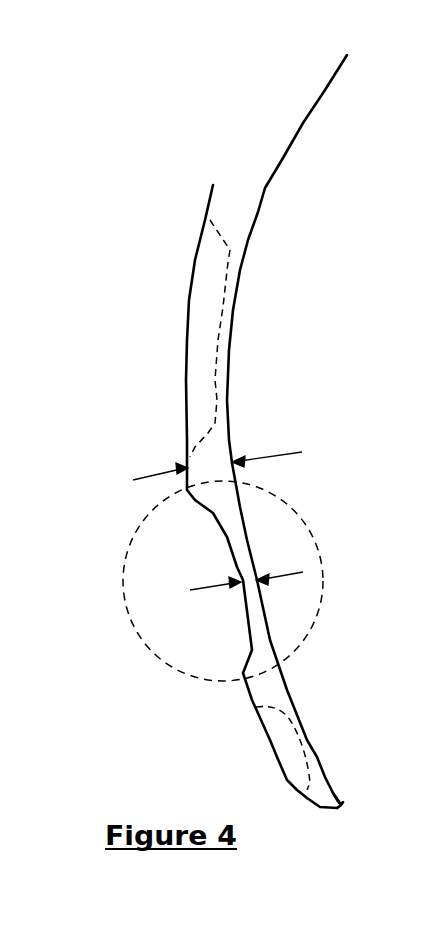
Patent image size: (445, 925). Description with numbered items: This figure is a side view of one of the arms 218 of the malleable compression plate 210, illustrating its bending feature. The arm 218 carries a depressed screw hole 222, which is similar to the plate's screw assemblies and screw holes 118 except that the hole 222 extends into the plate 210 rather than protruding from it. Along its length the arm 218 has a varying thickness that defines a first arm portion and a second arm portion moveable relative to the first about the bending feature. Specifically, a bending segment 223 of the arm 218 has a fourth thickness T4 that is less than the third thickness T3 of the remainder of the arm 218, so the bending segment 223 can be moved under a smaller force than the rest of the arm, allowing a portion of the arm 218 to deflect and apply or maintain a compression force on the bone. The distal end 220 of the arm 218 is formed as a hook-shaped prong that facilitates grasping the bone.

The malleable compression plate 210 is at (245, 431).
The arm 218 is at (257, 213).
The depressed screw hole 222 is at (206, 320).
The bending segment 223 is at (303, 516).
The screw hole 118 is at (288, 743).
The distal end 220 is at (344, 797).
The third thickness T3 is at (133, 480).
The fourth thickness T4 is at (231, 568).